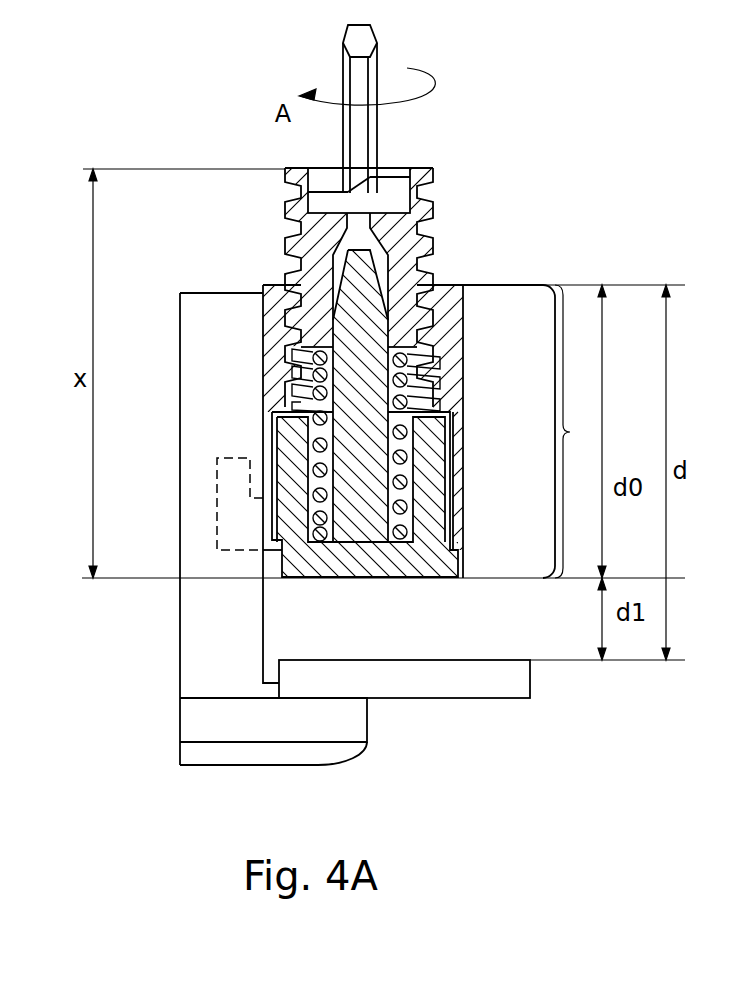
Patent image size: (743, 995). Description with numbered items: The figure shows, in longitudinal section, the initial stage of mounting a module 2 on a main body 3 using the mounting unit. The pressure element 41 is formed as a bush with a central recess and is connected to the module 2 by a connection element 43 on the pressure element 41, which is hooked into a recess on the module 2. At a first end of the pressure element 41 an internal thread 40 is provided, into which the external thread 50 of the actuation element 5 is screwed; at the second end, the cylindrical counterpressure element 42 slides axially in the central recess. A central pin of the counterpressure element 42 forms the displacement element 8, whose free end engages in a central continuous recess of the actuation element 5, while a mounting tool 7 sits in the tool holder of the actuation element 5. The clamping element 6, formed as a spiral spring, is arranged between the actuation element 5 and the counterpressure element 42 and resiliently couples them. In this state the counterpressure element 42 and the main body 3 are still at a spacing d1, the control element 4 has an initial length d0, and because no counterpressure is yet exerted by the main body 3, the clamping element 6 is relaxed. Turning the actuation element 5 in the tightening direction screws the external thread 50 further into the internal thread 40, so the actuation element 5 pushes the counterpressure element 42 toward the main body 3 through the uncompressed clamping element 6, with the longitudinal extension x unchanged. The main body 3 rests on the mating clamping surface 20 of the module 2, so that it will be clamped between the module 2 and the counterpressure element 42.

The module 2 is at (208, 397).
The main body 3 is at (483, 678).
The control element 4 is at (426, 431).
The actuation element 5 is at (403, 232).
The clamping element 6 is at (290, 368).
The mounting tool 7 is at (363, 80).
The displacement element 8 is at (358, 352).
The mating clamping surface 20 is at (330, 720).
The internal thread 40 is at (298, 333).
The pressure element 41 is at (447, 362).
The counterpressure element 42 is at (418, 565).
The connection element 43 is at (215, 519).
The external thread 50 is at (288, 240).